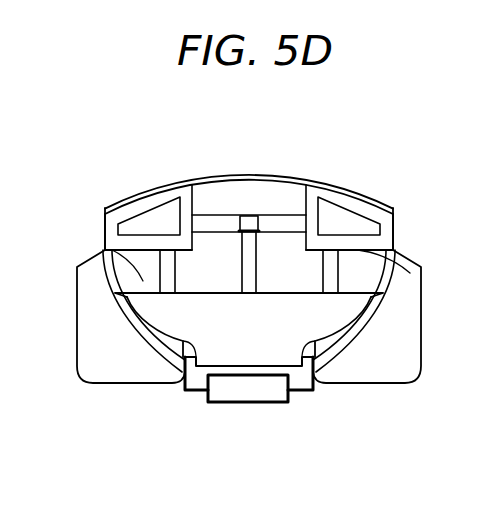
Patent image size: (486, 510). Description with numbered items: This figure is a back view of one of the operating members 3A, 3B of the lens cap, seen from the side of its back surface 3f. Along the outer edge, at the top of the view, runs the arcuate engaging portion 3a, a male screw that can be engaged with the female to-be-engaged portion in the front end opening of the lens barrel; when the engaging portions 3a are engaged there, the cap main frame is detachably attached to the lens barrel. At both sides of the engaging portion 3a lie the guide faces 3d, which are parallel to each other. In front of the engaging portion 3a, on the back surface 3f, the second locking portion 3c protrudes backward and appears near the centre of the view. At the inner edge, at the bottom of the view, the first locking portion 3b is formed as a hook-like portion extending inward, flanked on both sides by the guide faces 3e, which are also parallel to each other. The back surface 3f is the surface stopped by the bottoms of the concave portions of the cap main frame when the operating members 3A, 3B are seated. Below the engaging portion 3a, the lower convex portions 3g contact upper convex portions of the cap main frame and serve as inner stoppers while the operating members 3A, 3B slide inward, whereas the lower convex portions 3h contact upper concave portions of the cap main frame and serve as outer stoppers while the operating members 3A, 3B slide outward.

The engaging portion 3a is at (223, 175).
The operating member 3A is at (249, 184).
The operating member 3B is at (249, 217).
The second locking portion 3c is at (246, 216).
The guide faces 3d is at (105, 230).
The back surface 3f is at (318, 313).
The lower convex portions 3g is at (112, 276).
The lower convex portions 3h is at (185, 344).
The guide faces 3e is at (176, 384).
The first locking portion 3b is at (253, 405).